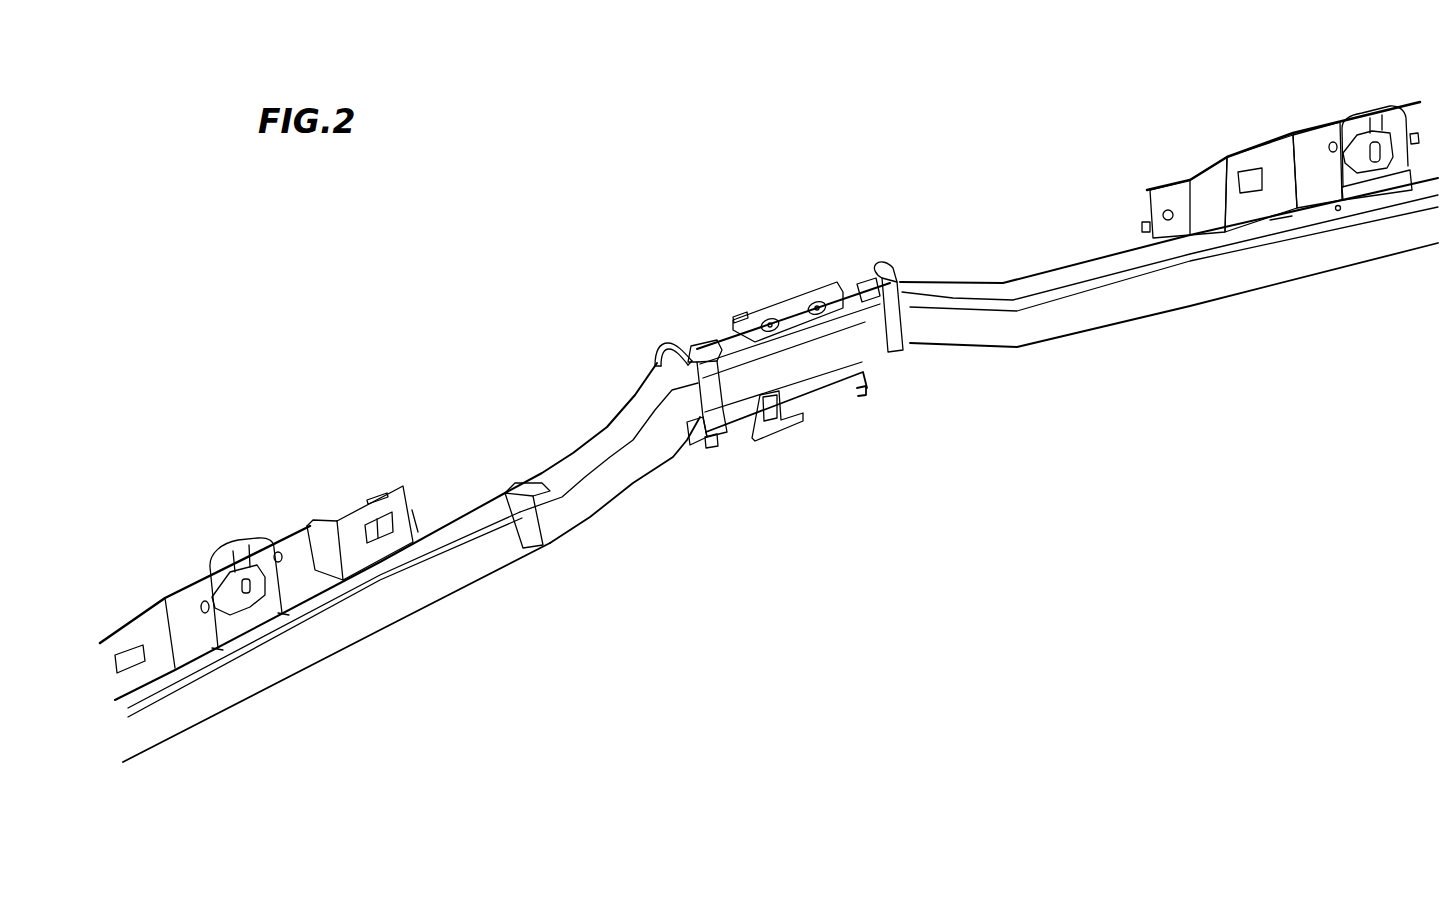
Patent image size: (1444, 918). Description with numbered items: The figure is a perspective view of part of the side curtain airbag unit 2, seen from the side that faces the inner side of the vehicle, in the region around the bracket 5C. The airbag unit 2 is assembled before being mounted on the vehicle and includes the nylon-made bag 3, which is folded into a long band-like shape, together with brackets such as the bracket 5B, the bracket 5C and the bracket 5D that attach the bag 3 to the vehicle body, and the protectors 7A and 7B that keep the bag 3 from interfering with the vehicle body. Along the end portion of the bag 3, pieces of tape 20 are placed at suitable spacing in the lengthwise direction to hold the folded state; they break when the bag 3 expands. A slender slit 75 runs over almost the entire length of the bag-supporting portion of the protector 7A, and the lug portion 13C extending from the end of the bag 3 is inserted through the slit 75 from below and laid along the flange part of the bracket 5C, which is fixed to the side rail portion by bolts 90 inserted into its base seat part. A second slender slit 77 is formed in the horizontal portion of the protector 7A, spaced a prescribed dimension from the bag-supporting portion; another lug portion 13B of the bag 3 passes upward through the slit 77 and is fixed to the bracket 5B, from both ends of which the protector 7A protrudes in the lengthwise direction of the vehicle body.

The side curtain airbag unit 2 is at (928, 207).
The nylon-made bag 3 is at (776, 432).
The protector 7A is at (1027, 283).
The protector 7B is at (452, 512).
The bracket 5B is at (1315, 138).
The bracket 5C is at (703, 345).
The bracket 5D is at (297, 525).
The lug portion 13B is at (1397, 113).
The lug portion 13C is at (787, 300).
The tapes 20 is at (545, 547).
The slit 75 is at (847, 317).
The slit 77 is at (1340, 212).
The bolts 90 is at (785, 420).